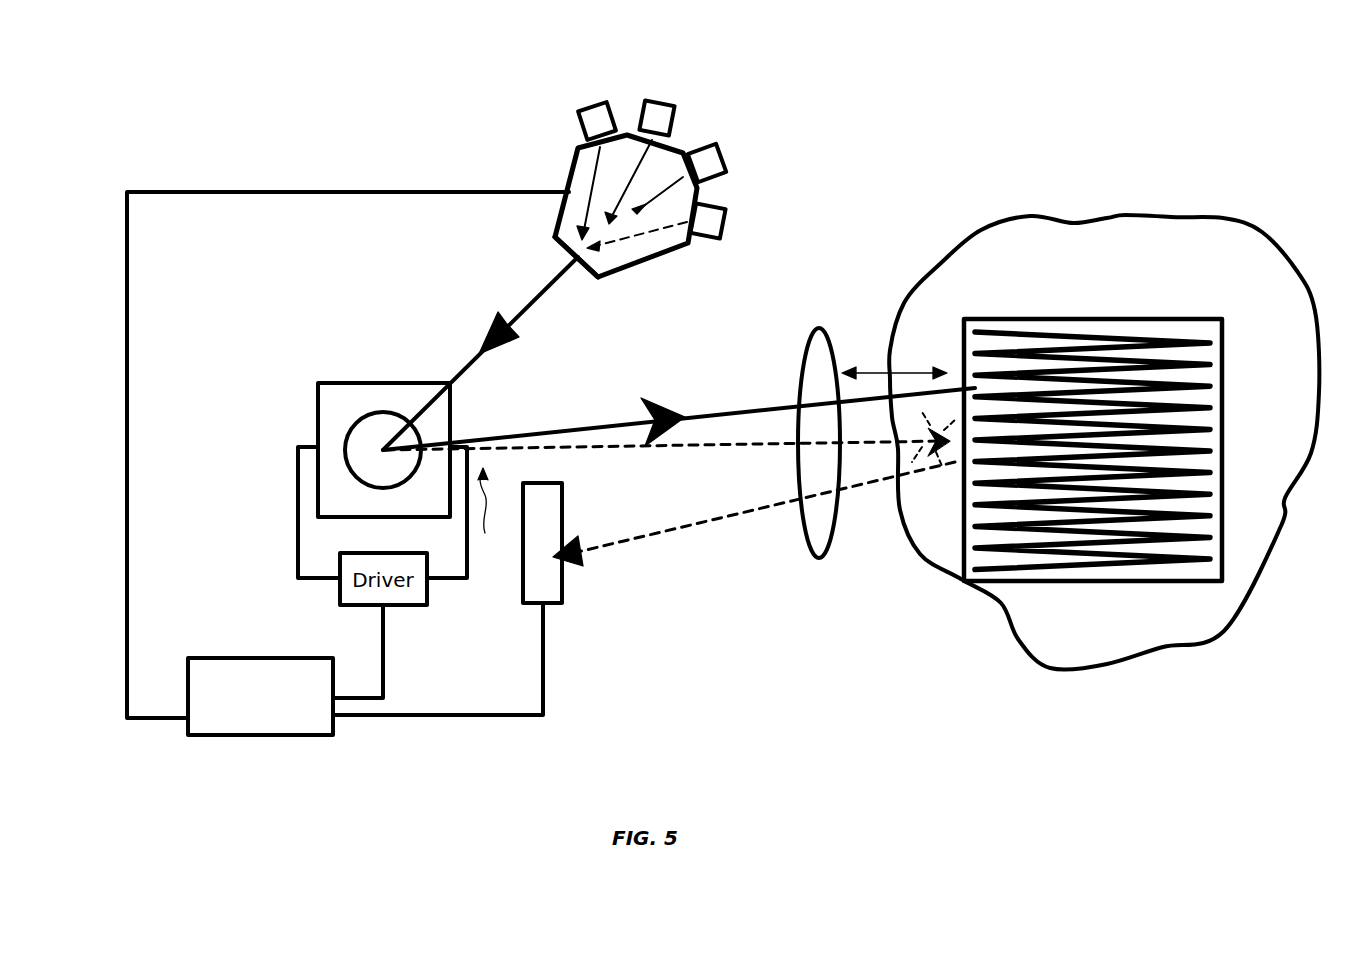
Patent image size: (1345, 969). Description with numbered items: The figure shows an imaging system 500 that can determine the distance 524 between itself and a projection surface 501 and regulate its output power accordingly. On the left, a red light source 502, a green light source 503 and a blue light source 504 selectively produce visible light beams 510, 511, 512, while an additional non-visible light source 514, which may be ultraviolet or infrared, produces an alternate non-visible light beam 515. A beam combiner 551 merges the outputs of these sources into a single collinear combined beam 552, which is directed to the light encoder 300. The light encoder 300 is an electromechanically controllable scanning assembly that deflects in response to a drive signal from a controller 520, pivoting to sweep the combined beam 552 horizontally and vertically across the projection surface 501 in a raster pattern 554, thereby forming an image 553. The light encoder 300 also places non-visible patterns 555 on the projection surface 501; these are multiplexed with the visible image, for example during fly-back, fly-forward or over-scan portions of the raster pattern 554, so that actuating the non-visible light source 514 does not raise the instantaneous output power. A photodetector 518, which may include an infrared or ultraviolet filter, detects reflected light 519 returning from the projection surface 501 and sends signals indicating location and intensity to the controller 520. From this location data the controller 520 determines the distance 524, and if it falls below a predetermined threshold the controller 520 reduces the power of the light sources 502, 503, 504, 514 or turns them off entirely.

The imaging system 500 is at (964, 176).
The projection surface 501 is at (1125, 215).
The red light source 502 is at (592, 102).
The green light source 503 is at (660, 95).
The blue light source 504 is at (727, 158).
The non-visible light source 514 is at (730, 222).
The light beam 510 is at (594, 177).
The light beam 511 is at (626, 190).
The light beam 512 is at (650, 203).
The non-visible light beam 515 is at (640, 233).
The beam combiner 551 is at (587, 263).
The combined beam 552 is at (535, 295).
The light encoder 300 is at (342, 437).
The photodetector 518 is at (563, 588).
The reflected light 519 is at (670, 525).
The controller 520 is at (237, 735).
The distance 524 is at (868, 372).
The image 553 is at (1226, 338).
The raster pattern 554 is at (1105, 338).
The non-visible pattern 555 is at (950, 483).